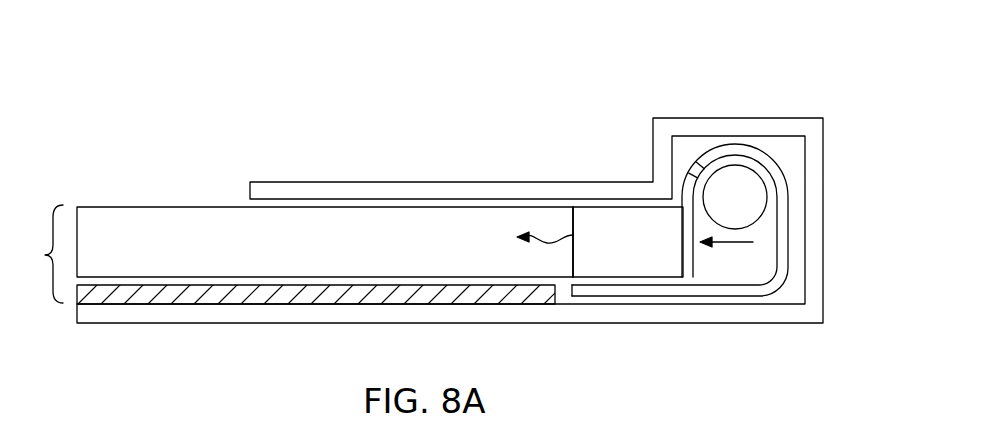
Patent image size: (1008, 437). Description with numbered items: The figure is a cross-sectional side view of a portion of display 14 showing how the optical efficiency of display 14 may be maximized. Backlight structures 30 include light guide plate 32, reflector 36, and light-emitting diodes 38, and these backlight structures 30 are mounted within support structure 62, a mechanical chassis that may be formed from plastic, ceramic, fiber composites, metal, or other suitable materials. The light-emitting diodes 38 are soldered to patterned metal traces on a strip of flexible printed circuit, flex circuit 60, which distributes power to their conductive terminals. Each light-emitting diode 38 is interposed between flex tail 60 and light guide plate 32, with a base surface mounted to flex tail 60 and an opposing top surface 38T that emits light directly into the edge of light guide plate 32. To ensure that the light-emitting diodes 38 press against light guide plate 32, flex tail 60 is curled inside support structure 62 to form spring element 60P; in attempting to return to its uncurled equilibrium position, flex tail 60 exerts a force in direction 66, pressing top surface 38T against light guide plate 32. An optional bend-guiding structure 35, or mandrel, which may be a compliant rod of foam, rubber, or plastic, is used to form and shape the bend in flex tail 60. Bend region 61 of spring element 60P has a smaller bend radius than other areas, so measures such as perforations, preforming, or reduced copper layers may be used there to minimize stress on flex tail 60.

The display 14 is at (416, 65).
The backlight structures 30 is at (41, 254).
The light guide plate 32 is at (392, 220).
The bend-guiding structure 35 is at (755, 203).
The reflector 36 is at (220, 295).
The light-emitting diodes 38 is at (633, 262).
The top surface 38T is at (572, 223).
The flex circuit 60 is at (716, 222).
The spring element 60P is at (789, 168).
The bend region 61 is at (692, 166).
The support structure 62 is at (743, 126).
The direction 66 is at (735, 244).